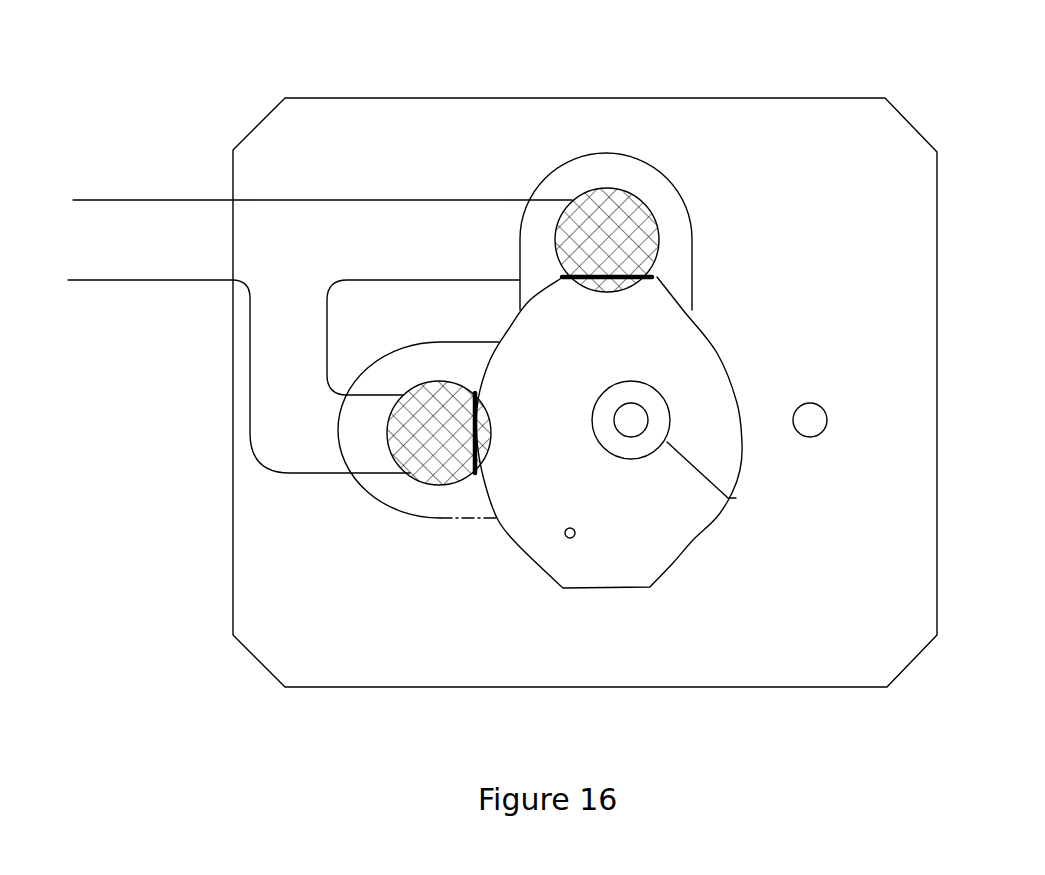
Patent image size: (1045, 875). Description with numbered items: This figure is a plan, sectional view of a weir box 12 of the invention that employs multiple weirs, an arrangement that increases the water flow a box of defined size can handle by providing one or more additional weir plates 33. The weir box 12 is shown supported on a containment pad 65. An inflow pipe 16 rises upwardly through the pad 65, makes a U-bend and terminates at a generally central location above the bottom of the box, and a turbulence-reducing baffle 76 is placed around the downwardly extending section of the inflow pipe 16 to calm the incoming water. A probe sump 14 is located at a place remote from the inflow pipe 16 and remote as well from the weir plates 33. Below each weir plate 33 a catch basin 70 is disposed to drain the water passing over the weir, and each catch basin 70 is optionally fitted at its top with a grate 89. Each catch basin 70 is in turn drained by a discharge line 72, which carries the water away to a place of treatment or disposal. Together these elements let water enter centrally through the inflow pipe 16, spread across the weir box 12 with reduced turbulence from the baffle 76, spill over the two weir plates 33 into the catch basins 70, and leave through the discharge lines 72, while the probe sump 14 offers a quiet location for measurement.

The weir box 12 is at (540, 572).
The probe sump 14 is at (573, 540).
The inflow pipe 16 is at (640, 437).
The weir plate 33 is at (643, 280).
The containment pad 65 is at (708, 663).
The catch basin 70 is at (605, 188).
The discharge line 72 is at (195, 222).
The turbulence-reducing baffle 76 is at (672, 421).
The grate 89 is at (622, 226).